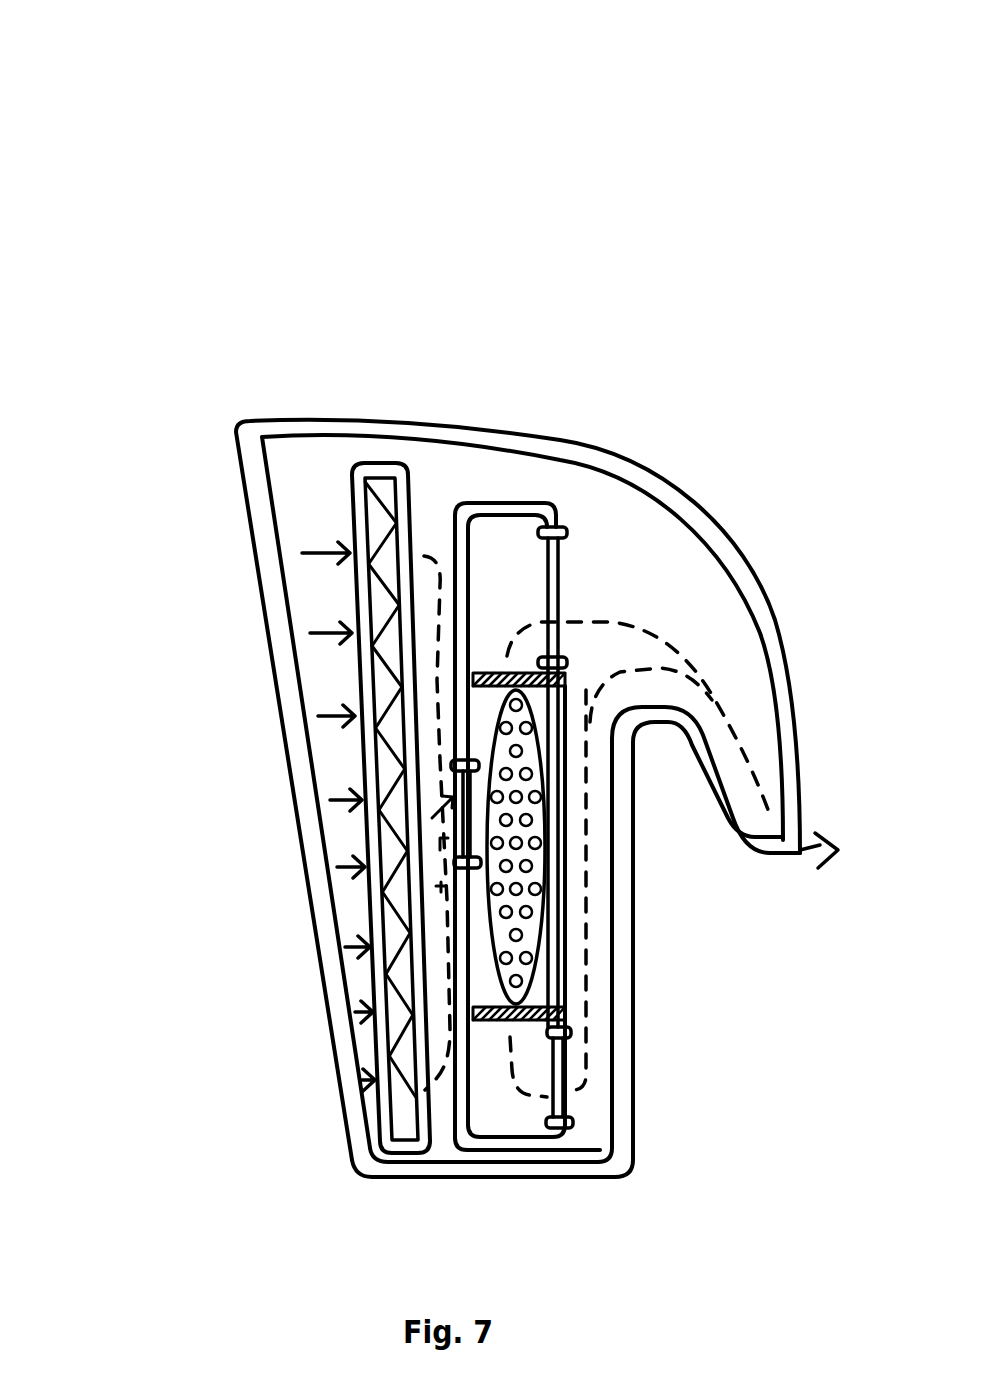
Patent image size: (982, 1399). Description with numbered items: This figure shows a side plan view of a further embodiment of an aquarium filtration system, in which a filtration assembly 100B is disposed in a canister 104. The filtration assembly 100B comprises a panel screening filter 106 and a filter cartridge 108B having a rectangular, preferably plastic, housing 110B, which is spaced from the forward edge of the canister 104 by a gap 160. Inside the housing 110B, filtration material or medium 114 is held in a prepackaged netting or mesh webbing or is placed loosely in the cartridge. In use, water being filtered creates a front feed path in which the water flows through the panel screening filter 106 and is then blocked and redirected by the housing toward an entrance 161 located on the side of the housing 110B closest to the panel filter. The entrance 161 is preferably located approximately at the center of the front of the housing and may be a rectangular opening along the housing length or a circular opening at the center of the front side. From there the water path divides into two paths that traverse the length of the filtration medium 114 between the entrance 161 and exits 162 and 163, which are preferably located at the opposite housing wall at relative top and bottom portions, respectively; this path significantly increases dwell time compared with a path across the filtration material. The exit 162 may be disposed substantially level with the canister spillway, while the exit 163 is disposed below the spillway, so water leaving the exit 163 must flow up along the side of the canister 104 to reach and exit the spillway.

The filtration assembly 100B is at (170, 88).
The canister 104 is at (262, 512).
The panel screening filter 106 is at (370, 737).
The filter cartridge 108B is at (467, 503).
The housing 110B is at (497, 503).
The filtration material or medium 114 is at (492, 830).
The gap 160 is at (597, 970).
The entrance 161 is at (455, 808).
The exit 162 is at (553, 600).
The exit 163 is at (557, 1072).